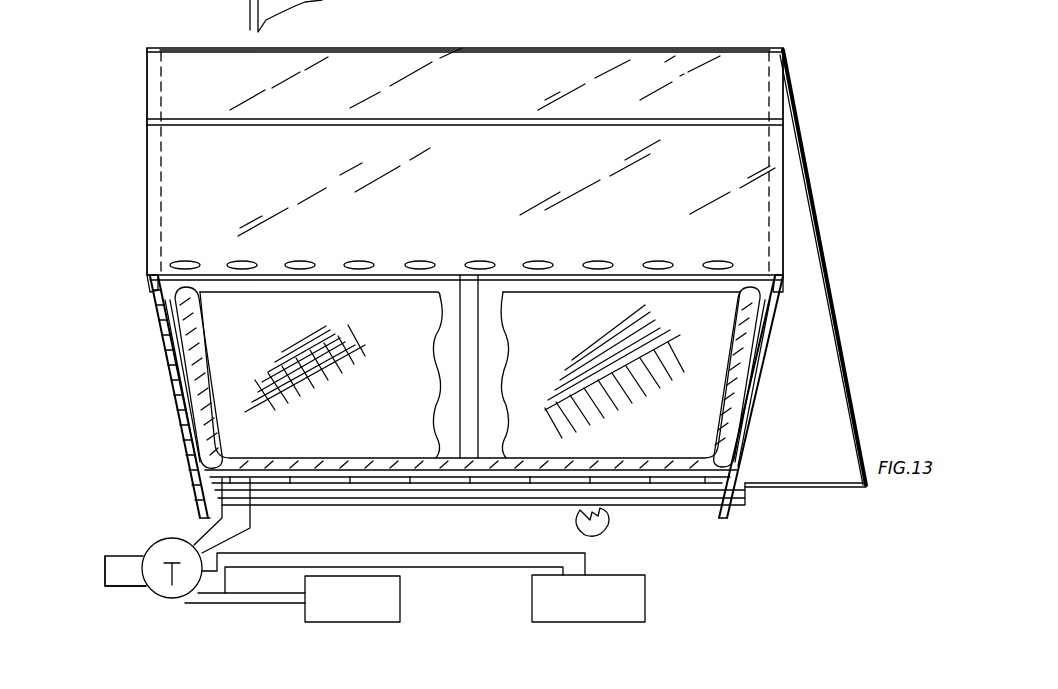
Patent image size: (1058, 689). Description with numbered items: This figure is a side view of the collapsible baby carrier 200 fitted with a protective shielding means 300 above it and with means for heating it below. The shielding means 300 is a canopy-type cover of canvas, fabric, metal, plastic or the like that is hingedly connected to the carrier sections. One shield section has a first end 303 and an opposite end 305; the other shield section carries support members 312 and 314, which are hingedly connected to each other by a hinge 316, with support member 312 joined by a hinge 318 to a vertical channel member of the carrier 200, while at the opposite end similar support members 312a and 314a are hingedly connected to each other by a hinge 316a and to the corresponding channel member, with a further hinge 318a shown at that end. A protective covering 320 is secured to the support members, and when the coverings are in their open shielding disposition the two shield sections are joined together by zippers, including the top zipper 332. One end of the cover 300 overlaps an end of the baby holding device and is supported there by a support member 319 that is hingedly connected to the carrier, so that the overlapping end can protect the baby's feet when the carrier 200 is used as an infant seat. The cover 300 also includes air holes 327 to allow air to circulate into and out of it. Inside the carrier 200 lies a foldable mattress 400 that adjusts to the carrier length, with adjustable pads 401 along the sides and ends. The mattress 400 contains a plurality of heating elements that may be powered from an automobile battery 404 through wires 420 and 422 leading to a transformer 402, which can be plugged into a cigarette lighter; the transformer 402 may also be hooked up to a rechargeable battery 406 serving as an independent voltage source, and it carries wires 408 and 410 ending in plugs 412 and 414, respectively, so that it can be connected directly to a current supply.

The baby carrier 200 is at (157, 379).
The shielding means 300 is at (576, 50).
The first end 303 is at (137, 315).
The other end 305 is at (842, 224).
The support member 312 is at (147, 160).
The support member 312a is at (786, 172).
The support member 314 is at (147, 66).
The support member 314a is at (762, 72).
The hinge 316 is at (147, 120).
The hinge 316a is at (786, 102).
The hinge 318 is at (150, 290).
The right corner clip 318a is at (786, 284).
The support member 319 is at (805, 488).
The protective covering 320 is at (172, 136).
The air holes 327 is at (360, 264).
The top zipper 332 is at (420, 48).
The mattress 400 is at (690, 468).
The pads 401 is at (692, 334).
The transformer 402 is at (145, 548).
The automobile battery 404 is at (640, 606).
The rechargeable battery 406 is at (400, 600).
The wire 408 is at (104, 556).
The wire 410 is at (175, 604).
The plug 412 is at (100, 592).
The plug 414 is at (108, 592).
The wire 420 is at (192, 530).
The wire 422 is at (250, 530).